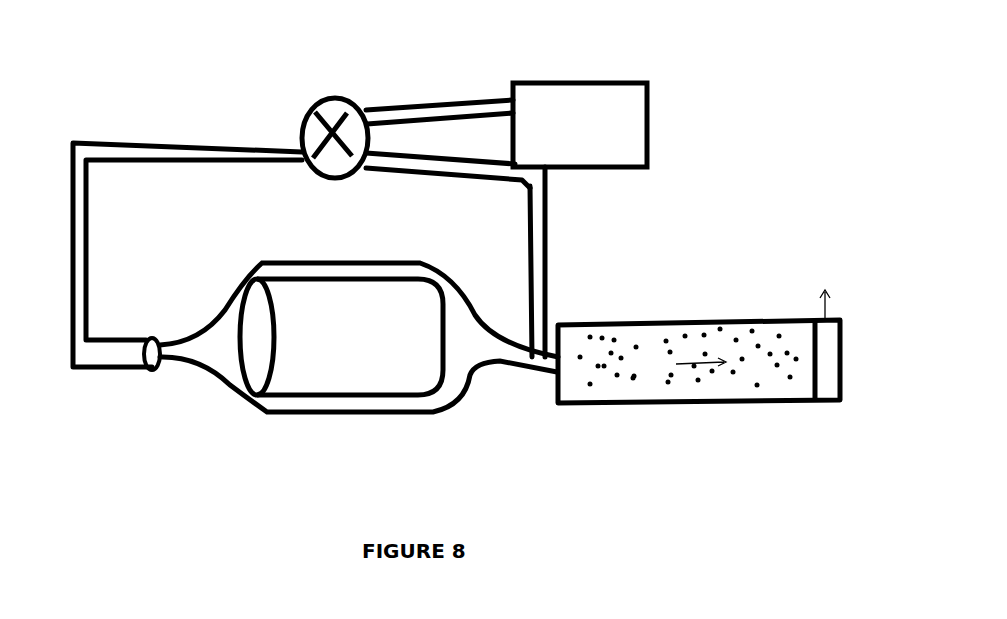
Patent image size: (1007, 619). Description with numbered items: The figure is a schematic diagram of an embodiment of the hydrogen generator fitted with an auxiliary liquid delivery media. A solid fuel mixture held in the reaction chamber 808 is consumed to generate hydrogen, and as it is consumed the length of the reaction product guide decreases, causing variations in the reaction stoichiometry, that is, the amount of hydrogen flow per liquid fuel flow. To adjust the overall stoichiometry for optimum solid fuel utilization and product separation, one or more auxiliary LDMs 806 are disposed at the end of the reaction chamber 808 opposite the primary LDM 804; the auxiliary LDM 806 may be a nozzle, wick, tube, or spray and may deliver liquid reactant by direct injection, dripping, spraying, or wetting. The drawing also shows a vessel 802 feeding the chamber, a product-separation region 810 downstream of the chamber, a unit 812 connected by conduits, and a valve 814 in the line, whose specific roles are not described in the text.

The container 802 is at (290, 395).
The primary LDM 804 is at (137, 352).
The auxiliary LDM 806 is at (550, 302).
The reaction chamber 808 is at (397, 420).
The product chamber 810 is at (657, 390).
The controller 812 is at (628, 103).
The valve 814 is at (334, 100).